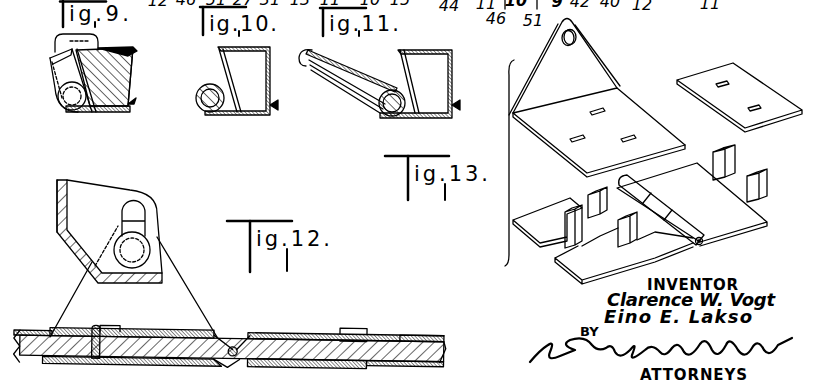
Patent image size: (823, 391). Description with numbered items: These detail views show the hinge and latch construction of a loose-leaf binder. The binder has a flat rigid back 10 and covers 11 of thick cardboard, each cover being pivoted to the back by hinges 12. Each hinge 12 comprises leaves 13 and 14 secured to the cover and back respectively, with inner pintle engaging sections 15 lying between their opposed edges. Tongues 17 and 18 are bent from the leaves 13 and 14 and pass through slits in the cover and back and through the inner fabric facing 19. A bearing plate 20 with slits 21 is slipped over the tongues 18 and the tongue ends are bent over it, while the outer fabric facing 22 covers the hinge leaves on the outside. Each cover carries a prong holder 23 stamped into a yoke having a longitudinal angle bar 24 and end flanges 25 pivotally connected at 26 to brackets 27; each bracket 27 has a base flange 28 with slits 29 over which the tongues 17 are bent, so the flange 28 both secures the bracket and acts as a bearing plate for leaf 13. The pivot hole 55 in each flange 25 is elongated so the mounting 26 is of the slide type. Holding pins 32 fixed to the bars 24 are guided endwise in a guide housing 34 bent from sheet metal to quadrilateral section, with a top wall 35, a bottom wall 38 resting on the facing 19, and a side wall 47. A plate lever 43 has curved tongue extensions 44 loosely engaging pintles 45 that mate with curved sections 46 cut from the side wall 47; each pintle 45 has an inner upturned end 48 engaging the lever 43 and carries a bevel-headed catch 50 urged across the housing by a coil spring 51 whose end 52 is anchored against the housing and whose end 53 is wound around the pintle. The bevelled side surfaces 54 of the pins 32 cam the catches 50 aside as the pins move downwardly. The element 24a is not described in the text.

In FIG. 12, the back 10 is at (446, 348).
In FIG. 12, the cover 11 is at (26, 340).
In FIG. 13, the hinge 12 is at (703, 246).
In FIG. 12, the hinge 12 is at (233, 340).
In FIG. 13, the hinge leaf 13 is at (614, 262).
In FIG. 12, the hinge leaf 13 is at (128, 363).
In FIG. 13, the hinge leaf 14 is at (750, 222).
In FIG. 12, the hinge leaf 14 is at (300, 363).
In FIG. 13, the pintle engaging section 15 is at (688, 218).
In FIG. 13, the tongue 17 is at (562, 207).
In FIG. 12, the tongue 17 is at (117, 325).
In FIG. 13, the tongue 18 is at (735, 157).
In FIG. 12, the tongue 18 is at (355, 324).
In FIG. 12, the fabric facing 19 is at (268, 330).
In FIG. 13, the bearing plate 20 is at (735, 62).
In FIG. 12, the bearing plate 20 is at (408, 330).
In FIG. 13, the slit 21 is at (756, 105).
In FIG. 12, the outer fabric facing 22 is at (400, 361).
In FIG. 12, the prong holder 23 is at (81, 183).
In FIG. 12, the angle bar 24 is at (58, 180).
In FIG. 12, the side wall 24a is at (56, 215).
In FIG. 12, the end flange 25 is at (100, 198).
In FIG. 12, the pivotal connection 26 is at (148, 246).
In FIG. 13, the bracket 27 is at (594, 58).
In FIG. 12, the bracket 27 is at (168, 263).
In FIG. 13, the base flange 28 is at (618, 101).
In FIG. 12, the base flange 28 is at (181, 328).
In FIG. 13, the slit 29 is at (622, 140).
In FIG. 12, the slit 29 is at (93, 326).
In FIG. 9, the holding pin 32 is at (133, 52).
In FIG. 9, the guide housing 34 is at (133, 102).
In FIG. 10, the guide housing 34 is at (276, 105).
In FIG. 11, the guide housing 34 is at (458, 105).
In FIG. 10, the top wall 35 is at (250, 52).
In FIG. 11, the top wall 35 is at (428, 55).
In FIG. 9, the bottom wall 38 is at (120, 113).
In FIG. 10, the bottom wall 38 is at (250, 116).
In FIG. 11, the bottom wall 38 is at (430, 119).
In FIG. 11, the plate lever 43 is at (355, 92).
In FIG. 11, the curved tongue extension 44 is at (387, 117).
In FIG. 9, the pintle 45 is at (60, 98).
In FIG. 10, the pintle 45 is at (203, 106).
In FIG. 11, the pintle 45 is at (381, 111).
In FIG. 10, the pintle engaging section 46 is at (197, 92).
In FIG. 10, the side wall 47 is at (221, 59).
In FIG. 11, the inner upturned end 48 is at (322, 74).
In FIG. 9, the catch 50 is at (72, 42).
In FIG. 9, the coil spring 51 is at (58, 62).
In FIG. 9, the spring end 52 is at (82, 113).
In FIG. 9, the spring end 53 is at (74, 55).
In FIG. 9, the bevelled side surface 54 is at (98, 68).
In FIG. 12, the pivot hole 55 is at (147, 213).